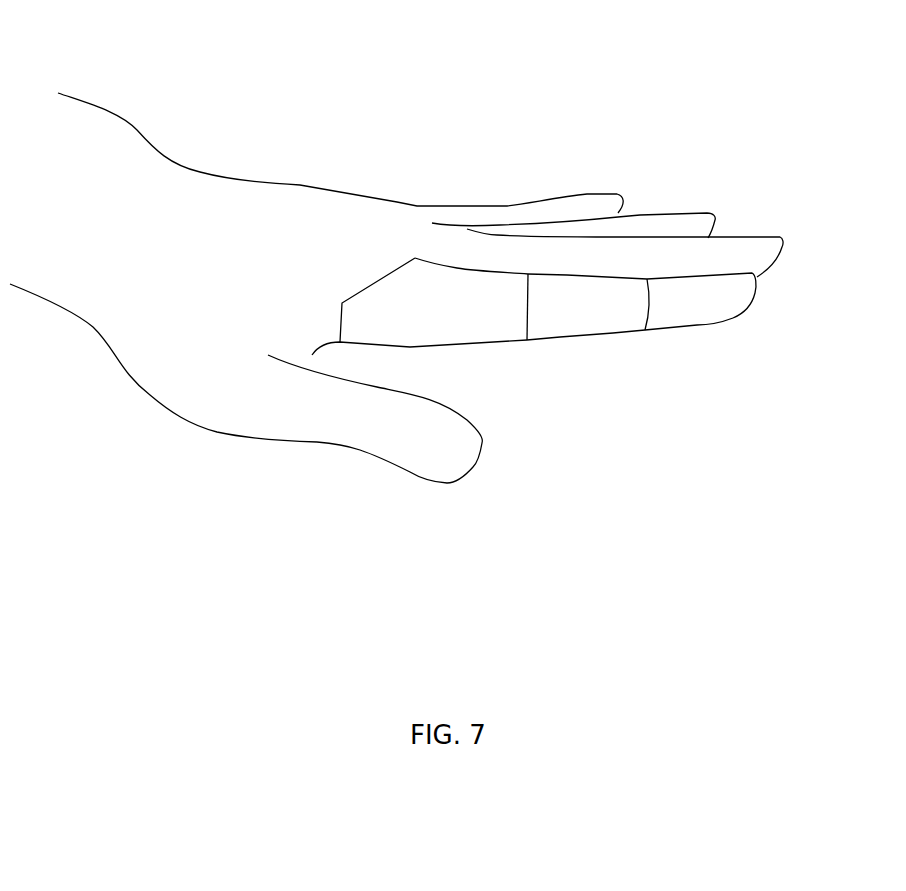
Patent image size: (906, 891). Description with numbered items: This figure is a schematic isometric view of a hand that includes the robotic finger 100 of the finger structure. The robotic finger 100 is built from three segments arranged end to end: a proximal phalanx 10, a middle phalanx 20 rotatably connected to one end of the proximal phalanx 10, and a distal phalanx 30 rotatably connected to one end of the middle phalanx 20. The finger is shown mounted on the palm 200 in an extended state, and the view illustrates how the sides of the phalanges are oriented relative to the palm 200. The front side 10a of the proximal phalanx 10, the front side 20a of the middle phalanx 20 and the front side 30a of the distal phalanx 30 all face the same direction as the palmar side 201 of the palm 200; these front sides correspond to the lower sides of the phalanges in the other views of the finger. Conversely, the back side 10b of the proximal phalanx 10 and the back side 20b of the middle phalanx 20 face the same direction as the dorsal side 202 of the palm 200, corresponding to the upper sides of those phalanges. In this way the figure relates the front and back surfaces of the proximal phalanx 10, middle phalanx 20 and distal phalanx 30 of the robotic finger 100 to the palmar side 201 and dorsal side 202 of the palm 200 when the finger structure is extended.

The robotic finger 100 is at (563, 292).
The proximal phalanx 10 is at (428, 292).
The front side of the proximal phalanx 10a is at (482, 348).
The back side of the proximal phalanx 10b is at (458, 277).
The middle phalanx 20 is at (604, 289).
The front side of the middle phalanx 20a is at (615, 333).
The back side of the middle phalanx 20b is at (610, 278).
The distal phalanx 30 is at (729, 385).
The front side of the distal phalanx 30a is at (732, 320).
The palm 200 is at (396, 316).
The palmar side of the palm 201 is at (320, 357).
The dorsal side of the palm 202 is at (210, 248).